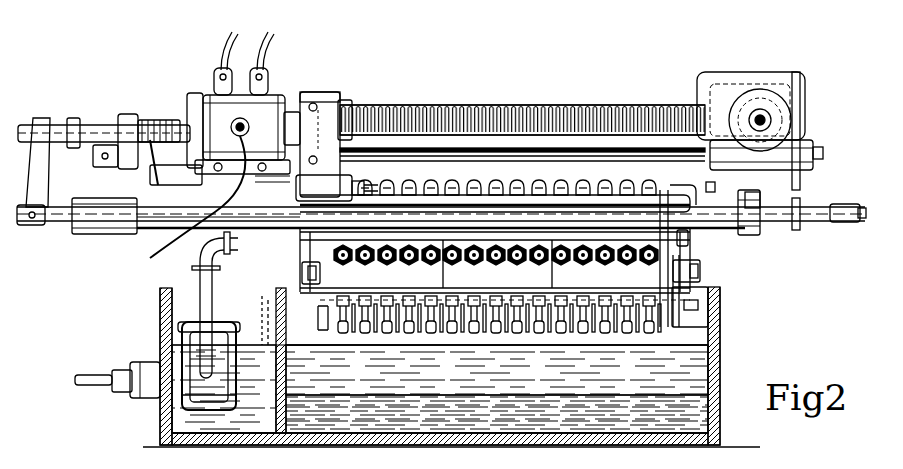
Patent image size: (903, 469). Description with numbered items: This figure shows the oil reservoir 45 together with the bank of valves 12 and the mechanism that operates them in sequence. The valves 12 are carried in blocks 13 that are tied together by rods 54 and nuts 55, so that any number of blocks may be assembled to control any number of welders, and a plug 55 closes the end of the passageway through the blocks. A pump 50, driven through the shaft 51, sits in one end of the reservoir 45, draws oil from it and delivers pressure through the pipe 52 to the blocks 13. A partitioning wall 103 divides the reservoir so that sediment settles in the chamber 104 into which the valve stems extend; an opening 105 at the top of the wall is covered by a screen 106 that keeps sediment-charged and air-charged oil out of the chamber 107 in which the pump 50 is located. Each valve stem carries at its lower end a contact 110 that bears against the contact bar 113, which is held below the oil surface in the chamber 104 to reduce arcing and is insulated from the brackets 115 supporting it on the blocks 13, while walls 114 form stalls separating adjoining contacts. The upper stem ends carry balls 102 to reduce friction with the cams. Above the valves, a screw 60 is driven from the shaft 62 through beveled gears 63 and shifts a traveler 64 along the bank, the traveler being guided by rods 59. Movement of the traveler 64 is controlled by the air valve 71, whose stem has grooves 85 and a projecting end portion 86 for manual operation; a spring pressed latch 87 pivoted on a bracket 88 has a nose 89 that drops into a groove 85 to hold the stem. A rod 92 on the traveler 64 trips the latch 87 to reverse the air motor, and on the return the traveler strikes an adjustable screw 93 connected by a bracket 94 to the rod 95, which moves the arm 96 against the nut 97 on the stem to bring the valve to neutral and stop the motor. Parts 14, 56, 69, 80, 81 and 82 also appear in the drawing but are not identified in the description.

The valves 12 is at (643, 186).
The blocks 13 is at (528, 200).
The nuts 14 is at (512, 250).
The reservoir 45 is at (705, 402).
The pump 50 is at (200, 392).
The shaft 51 is at (92, 378).
The pipe 52 is at (200, 270).
The rods 54 is at (300, 274).
The nuts 55 is at (318, 272).
The bolt 56 is at (688, 244).
The rods 59 is at (636, 150).
The screw 60 is at (462, 118).
The shaft 62 is at (762, 120).
The beveled gears 63 is at (742, 92).
The traveler 64 is at (322, 108).
The nut 69 is at (345, 112).
The air valve 71 is at (262, 104).
The cable 80 is at (122, 184).
The lead 81 is at (238, 58).
The lead 82 is at (153, 58).
The grooves 85 is at (184, 110).
The projecting end portion 86 is at (30, 150).
The spring pressed latch 87 is at (154, 128).
The bracket 88 is at (124, 112).
The projecting nose 89 is at (192, 128).
The rod 92 is at (195, 182).
The adjustable screw 93 is at (710, 194).
The bracket 94 is at (757, 228).
The rod 95 is at (862, 212).
The arm 96 is at (33, 170).
The nut 97 is at (75, 118).
The balls 102 is at (628, 184).
The partitioning wall 103 is at (282, 395).
The chamber 104 is at (520, 405).
The opening 105 is at (280, 372).
The screen 106 is at (278, 350).
The chamber 107 is at (200, 424).
The contact 110 is at (405, 318).
The contact bar 113 is at (700, 340).
The walls 114 is at (488, 320).
The brackets 115 is at (708, 300).